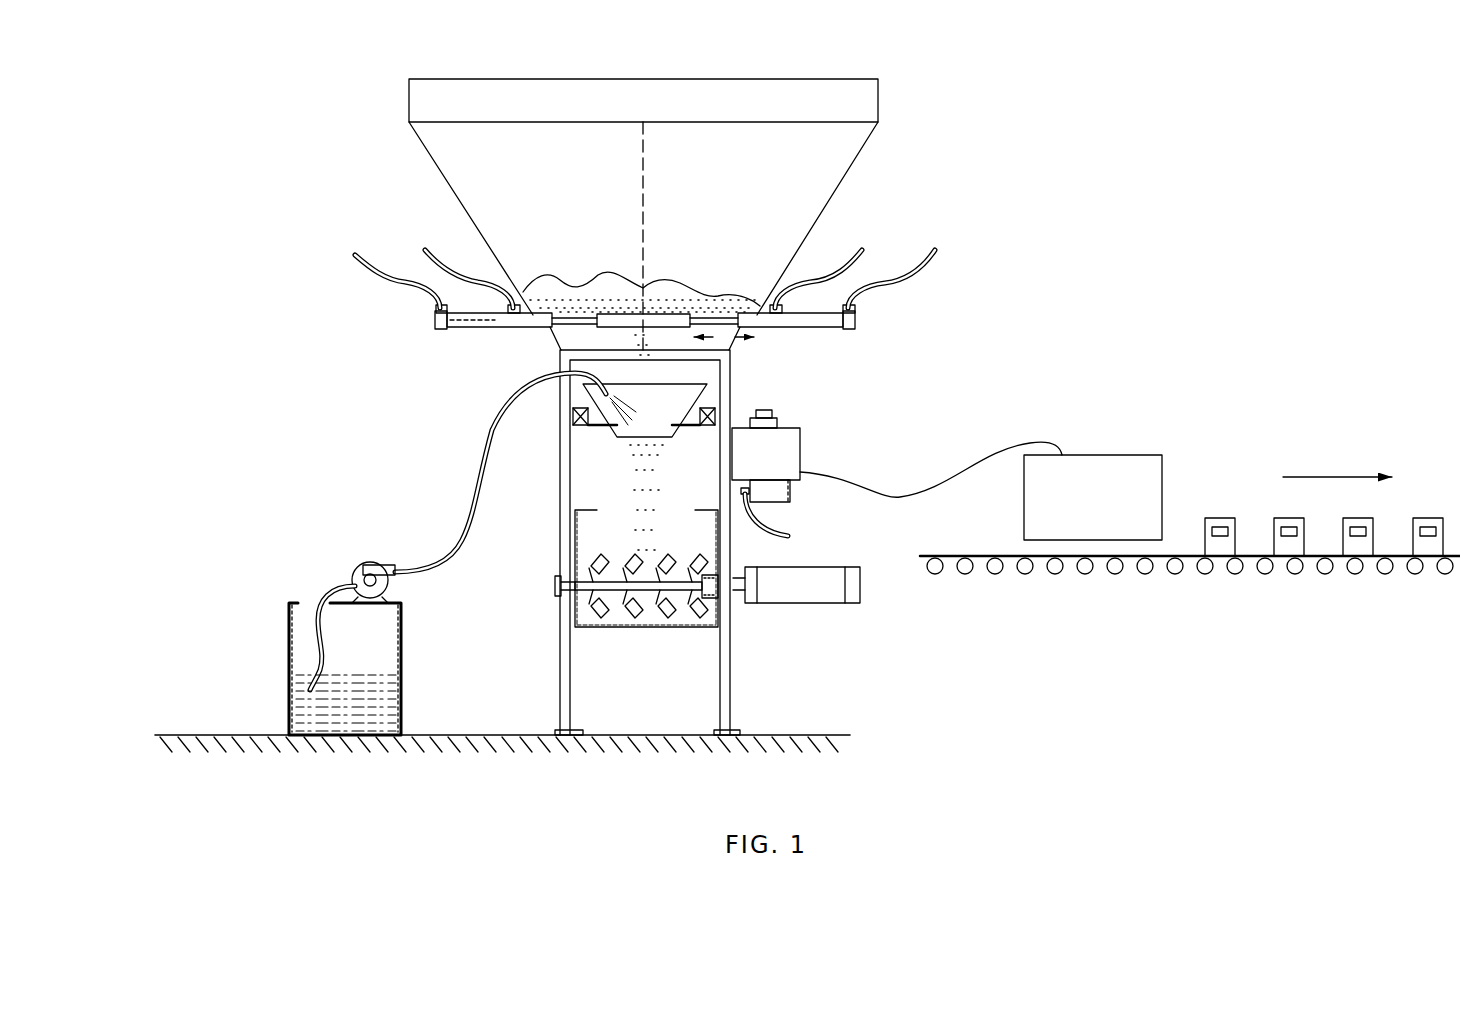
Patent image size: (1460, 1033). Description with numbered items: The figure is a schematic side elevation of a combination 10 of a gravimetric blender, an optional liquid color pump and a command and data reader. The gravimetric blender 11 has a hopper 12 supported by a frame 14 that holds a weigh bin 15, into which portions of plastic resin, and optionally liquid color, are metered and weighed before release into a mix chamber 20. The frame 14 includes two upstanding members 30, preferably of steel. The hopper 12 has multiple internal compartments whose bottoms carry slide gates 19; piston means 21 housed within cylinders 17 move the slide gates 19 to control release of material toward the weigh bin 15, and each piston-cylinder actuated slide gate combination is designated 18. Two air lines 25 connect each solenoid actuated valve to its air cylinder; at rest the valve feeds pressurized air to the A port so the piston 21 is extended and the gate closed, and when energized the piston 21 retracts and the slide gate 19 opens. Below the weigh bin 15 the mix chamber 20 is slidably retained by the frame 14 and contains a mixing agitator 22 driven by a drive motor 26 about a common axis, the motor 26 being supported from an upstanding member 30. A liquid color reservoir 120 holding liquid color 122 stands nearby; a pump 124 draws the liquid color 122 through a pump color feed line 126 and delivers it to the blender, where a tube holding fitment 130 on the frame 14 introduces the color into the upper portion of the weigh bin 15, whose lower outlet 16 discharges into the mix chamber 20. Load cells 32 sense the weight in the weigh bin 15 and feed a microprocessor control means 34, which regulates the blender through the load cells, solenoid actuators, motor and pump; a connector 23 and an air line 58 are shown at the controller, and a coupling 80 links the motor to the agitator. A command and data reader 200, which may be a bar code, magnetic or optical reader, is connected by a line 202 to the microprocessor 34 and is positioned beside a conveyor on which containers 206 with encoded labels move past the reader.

The gravimetric blender, color addition pump and reader combination 10 is at (236, 264).
The gravimetric blender 11 is at (424, 211).
The hopper 12 is at (416, 153).
The frame 14 is at (742, 371).
The weigh bin 15 is at (708, 395).
The funnel outlet 16 is at (650, 440).
The cylinder 17 is at (458, 328).
The pneumatic piston-cylinder actuated slide gate combination 18 is at (878, 262).
The slide gate 19 is at (675, 318).
The mix chamber 20 is at (641, 612).
The piston means 21 is at (478, 310).
The mixing agitator 22 is at (678, 592).
The controller connector 23 is at (800, 441).
The air lines 25 is at (847, 275).
The drive motor 26 is at (315, 595).
The upstanding members 30 is at (560, 690).
The load cells 32 is at (574, 416).
The microprocessor control means 34 is at (777, 455).
The air line 58 is at (765, 500).
The motor drive coupling 80 is at (739, 604).
The liquid color reservoir 120 is at (288, 640).
The liquid color 122 is at (330, 707).
The pump 124 is at (372, 563).
The pump color feed line 126 is at (485, 437).
The tube holding fitment 130 is at (560, 368).
The command and data reader 200 is at (1112, 454).
The line 202 is at (1015, 448).
The containers 206 is at (1222, 518).
The A port A is at (789, 422).